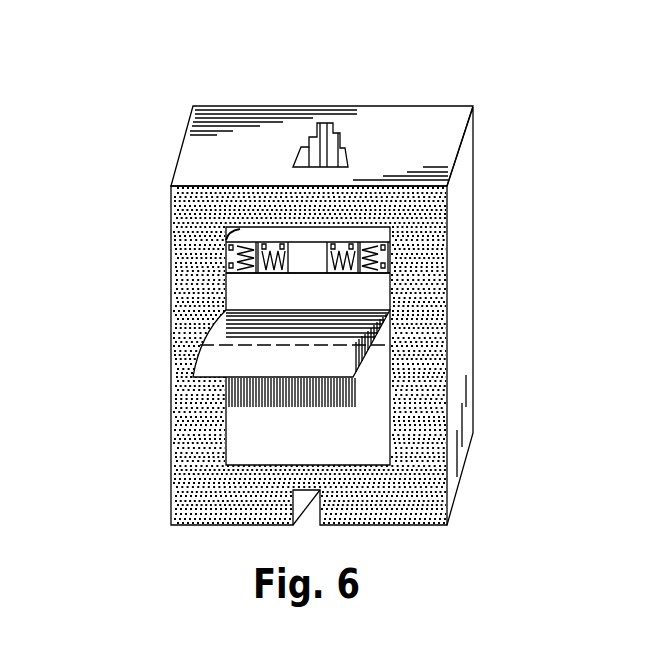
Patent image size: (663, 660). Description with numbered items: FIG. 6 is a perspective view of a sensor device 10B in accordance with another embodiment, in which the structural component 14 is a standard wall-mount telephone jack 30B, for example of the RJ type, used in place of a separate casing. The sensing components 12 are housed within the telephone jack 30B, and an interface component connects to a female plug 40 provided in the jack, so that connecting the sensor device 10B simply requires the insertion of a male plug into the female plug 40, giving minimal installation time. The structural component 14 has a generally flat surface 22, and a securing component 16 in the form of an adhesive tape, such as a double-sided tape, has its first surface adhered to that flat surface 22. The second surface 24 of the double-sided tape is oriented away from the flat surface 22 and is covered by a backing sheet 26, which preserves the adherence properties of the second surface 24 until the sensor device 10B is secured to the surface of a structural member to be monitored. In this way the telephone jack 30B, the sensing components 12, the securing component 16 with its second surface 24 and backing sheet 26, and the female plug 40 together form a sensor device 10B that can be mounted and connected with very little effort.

The sensor device 10B is at (150, 138).
The standard telephone jack 30B is at (428, 118).
The female plug 40 is at (316, 137).
The sensing components 12 is at (268, 242).
The structural component 14 is at (465, 240).
The second surface 24 is at (373, 292).
The backing sheet 26 is at (237, 360).
The securing component 16 is at (392, 388).
The flat surface 22 is at (425, 462).